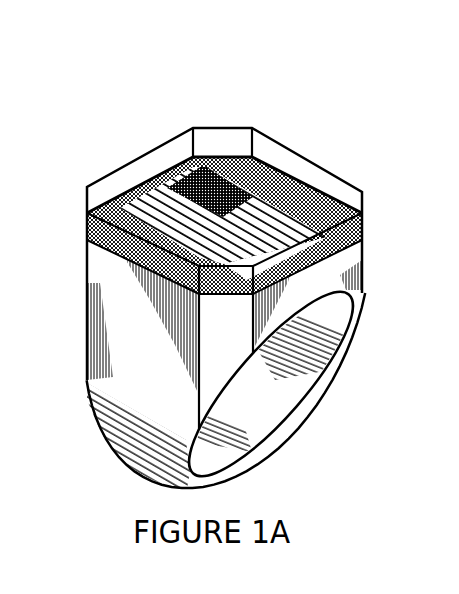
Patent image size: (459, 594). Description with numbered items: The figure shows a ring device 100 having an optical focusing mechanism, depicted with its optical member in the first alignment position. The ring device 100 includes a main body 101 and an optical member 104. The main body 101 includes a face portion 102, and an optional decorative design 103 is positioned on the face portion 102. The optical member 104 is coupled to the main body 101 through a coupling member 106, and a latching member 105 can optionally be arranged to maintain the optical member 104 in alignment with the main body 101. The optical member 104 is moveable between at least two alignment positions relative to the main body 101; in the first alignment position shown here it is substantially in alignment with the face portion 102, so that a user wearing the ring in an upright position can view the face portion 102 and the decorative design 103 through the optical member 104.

The ring device 100 is at (137, 148).
The main body 101 is at (222, 367).
The face portion 102 is at (230, 170).
The design 103 is at (252, 230).
The optical member 104 is at (107, 187).
The latching member 105 is at (327, 155).
The coupling member 106 is at (173, 288).